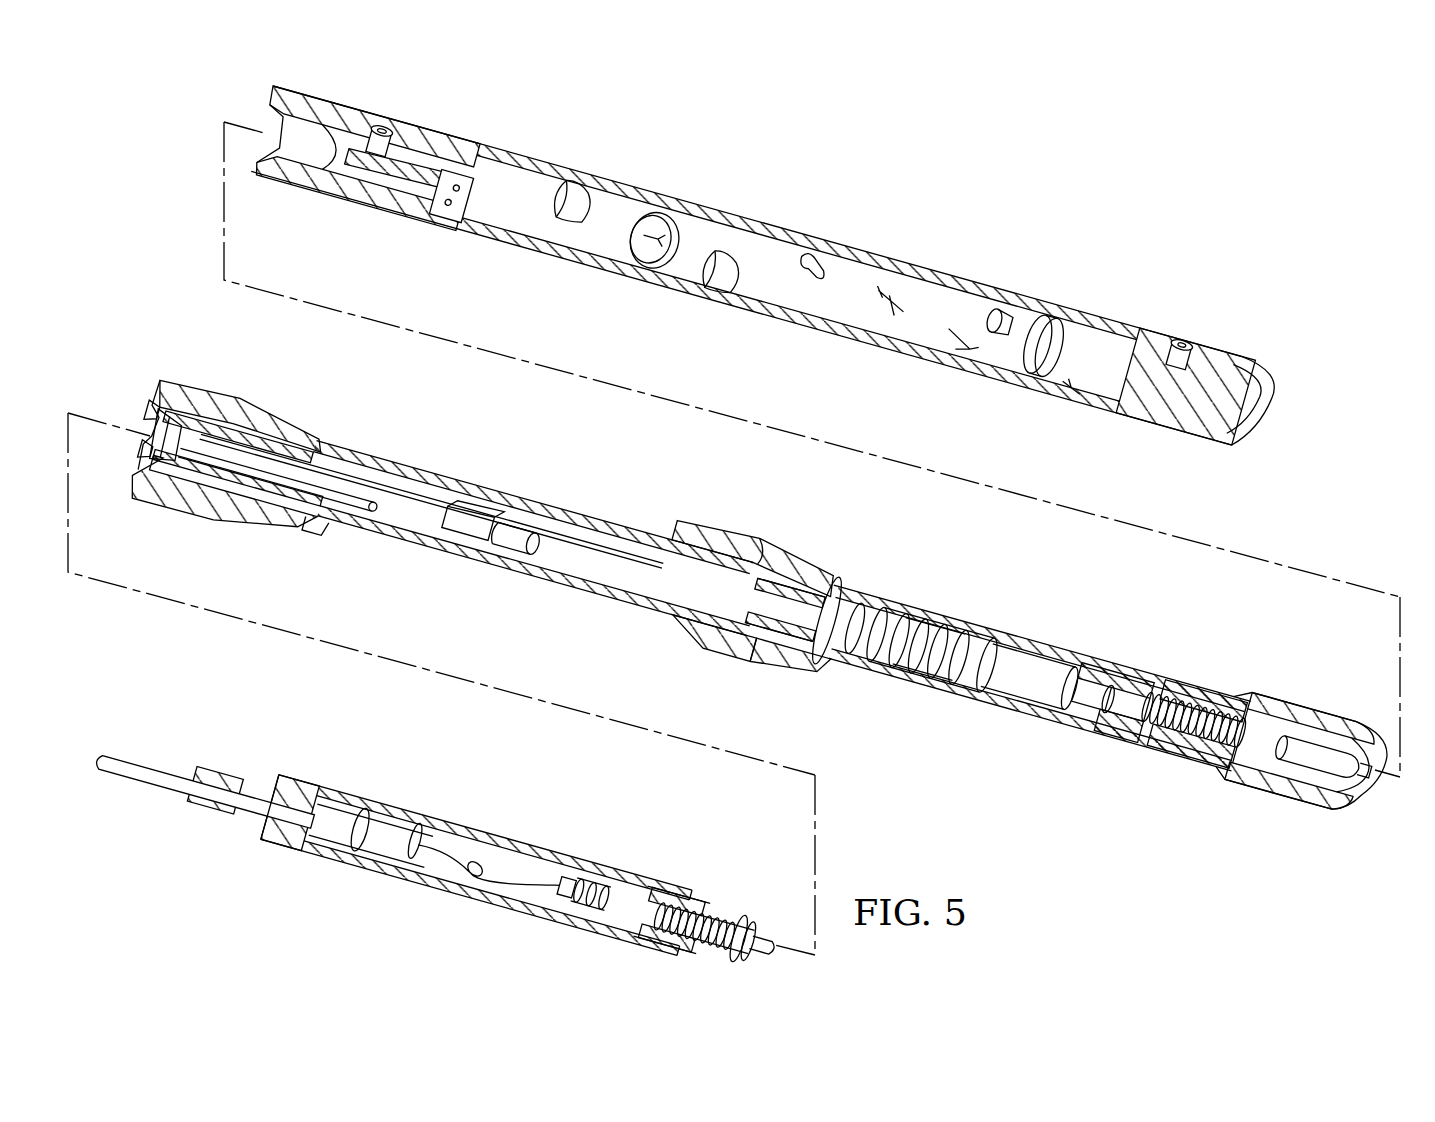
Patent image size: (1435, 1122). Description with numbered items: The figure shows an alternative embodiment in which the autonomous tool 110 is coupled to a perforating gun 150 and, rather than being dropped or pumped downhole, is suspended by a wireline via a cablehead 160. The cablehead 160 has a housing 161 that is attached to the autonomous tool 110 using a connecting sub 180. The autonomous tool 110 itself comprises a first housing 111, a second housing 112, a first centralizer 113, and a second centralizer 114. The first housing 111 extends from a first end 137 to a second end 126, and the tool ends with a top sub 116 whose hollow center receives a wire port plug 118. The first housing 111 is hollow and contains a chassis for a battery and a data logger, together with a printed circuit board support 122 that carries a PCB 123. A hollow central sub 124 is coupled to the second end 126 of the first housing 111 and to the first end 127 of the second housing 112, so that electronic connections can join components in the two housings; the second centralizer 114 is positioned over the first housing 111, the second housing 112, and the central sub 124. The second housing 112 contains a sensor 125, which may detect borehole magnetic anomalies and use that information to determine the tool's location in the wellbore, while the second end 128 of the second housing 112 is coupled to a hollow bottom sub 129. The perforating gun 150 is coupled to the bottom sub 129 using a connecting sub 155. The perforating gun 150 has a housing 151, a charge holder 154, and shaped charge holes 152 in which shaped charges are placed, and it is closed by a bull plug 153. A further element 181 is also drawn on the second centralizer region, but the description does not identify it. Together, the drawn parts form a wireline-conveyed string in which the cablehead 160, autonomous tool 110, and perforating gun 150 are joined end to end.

The autonomous tool 110 is at (570, 474).
The first housing 111 is at (474, 570).
The second housing 112 is at (1000, 715).
The first centralizer 113 is at (218, 386).
The second centralizer 114 is at (716, 520).
The top sub 116 is at (154, 410).
The wire port plug 118 is at (150, 453).
The printed circuit board (PCB) support 122 is at (320, 530).
The PCB 123 is at (355, 478).
The central sub 124 is at (1102, 664).
The sensor 125 is at (955, 620).
The second end of the first housing 126 is at (682, 640).
The first end of the second housing 127 is at (737, 664).
The second end of the second housing 128 is at (1112, 745).
The bottom sub 129 is at (1165, 760).
The first end of the first housing 137 is at (183, 506).
The perforating gun 150 is at (910, 224).
The housing 151 is at (784, 228).
The shaped charge holes 152 is at (568, 222).
The bull plug 153 is at (1222, 358).
The charge holder 154 is at (998, 316).
The connecting sub 155 is at (1210, 688).
The cablehead 160 is at (540, 817).
The housing 161 is at (442, 838).
The connecting sub 180 is at (682, 888).
The collar ridge 181 is at (758, 536).